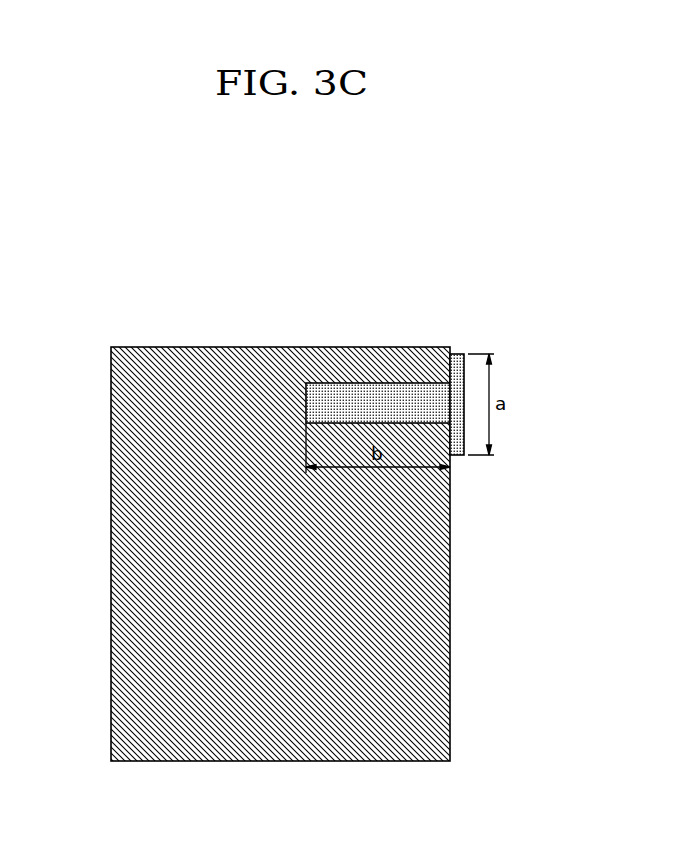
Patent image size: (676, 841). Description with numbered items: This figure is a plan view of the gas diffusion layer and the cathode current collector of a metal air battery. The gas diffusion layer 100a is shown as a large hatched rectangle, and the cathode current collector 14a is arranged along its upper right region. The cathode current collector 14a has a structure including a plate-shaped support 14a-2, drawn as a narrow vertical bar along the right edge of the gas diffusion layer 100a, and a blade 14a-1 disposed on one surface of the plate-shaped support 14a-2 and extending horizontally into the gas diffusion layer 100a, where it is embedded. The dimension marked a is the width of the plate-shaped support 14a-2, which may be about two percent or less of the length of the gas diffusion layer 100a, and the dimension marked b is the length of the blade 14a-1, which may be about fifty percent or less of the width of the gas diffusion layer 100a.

The gas diffusion layer 100a is at (178, 362).
The cathode current collector 14a is at (397, 348).
The blade 14a-1 is at (362, 393).
The plate-shaped support 14a-2 is at (457, 363).